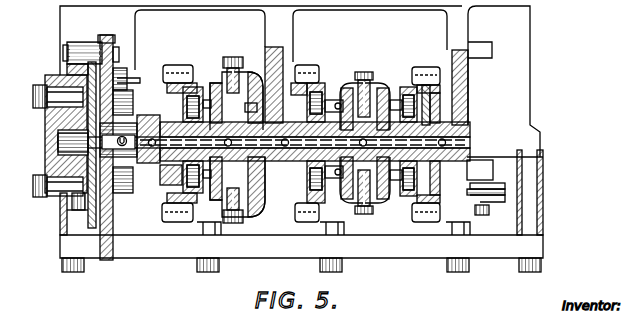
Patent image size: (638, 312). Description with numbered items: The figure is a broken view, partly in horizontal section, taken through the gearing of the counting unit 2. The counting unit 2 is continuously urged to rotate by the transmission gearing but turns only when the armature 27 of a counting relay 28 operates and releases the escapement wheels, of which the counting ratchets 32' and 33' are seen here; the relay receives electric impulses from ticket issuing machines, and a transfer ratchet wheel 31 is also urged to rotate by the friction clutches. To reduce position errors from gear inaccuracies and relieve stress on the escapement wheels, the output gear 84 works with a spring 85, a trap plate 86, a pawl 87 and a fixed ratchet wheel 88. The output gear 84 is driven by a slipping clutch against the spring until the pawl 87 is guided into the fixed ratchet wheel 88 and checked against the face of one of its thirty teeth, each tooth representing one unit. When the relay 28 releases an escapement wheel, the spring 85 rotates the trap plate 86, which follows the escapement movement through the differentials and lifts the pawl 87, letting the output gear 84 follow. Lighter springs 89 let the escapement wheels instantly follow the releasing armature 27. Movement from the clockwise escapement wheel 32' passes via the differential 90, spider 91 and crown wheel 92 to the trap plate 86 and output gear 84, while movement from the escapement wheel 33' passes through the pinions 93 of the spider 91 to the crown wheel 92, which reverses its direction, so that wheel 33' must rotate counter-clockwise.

The counting unit 2 is at (501, 91).
The armature 27 is at (184, 64).
The counting relay 28 is at (470, 193).
The transfer ratchet wheel 31 is at (426, 70).
The counting ratchet 32' is at (302, 72).
The counting ratchet 33' is at (135, 73).
The output gear 84 is at (110, 262).
The spring 85 is at (129, 188).
The trap plate 86 is at (93, 229).
The pawl 87 is at (86, 45).
The fixed ratchet wheel 88 is at (62, 206).
The spring 89 is at (191, 81).
The differential 90 is at (385, 207).
The spider 91 is at (261, 73).
The crown wheel 92 is at (248, 106).
The pinion 93 is at (226, 70).